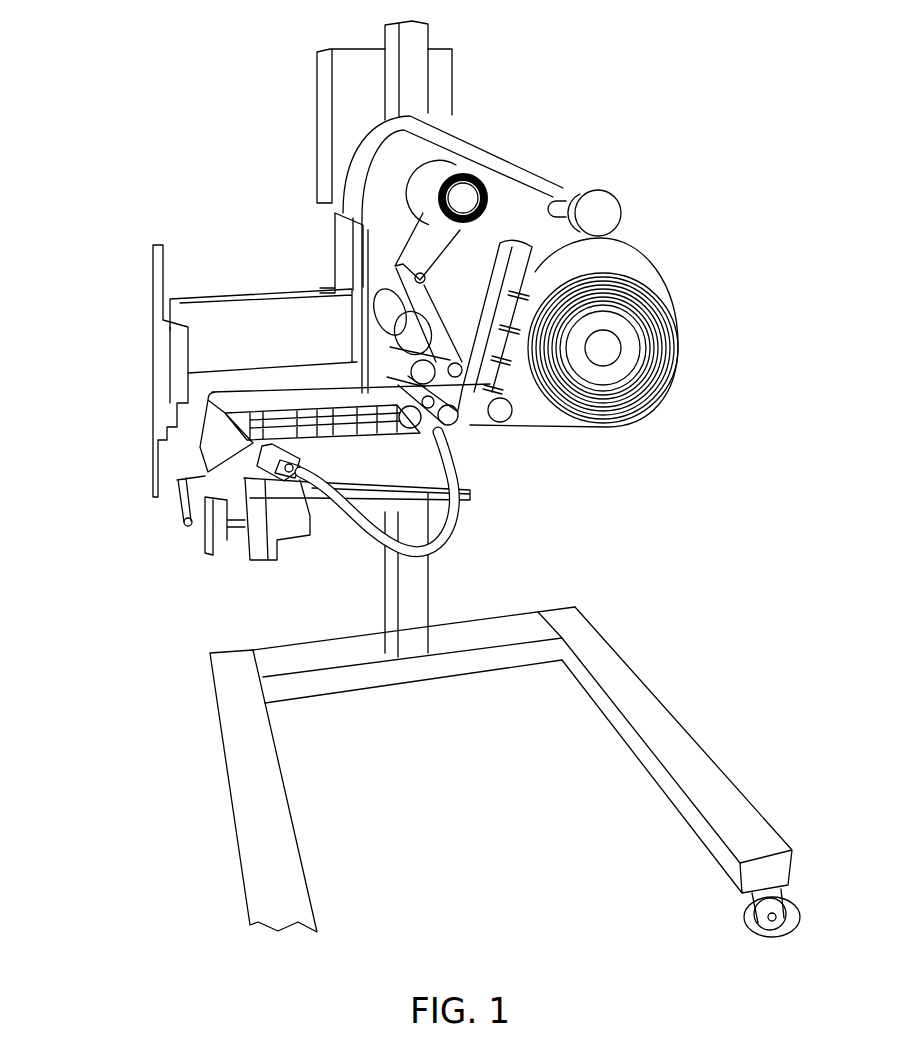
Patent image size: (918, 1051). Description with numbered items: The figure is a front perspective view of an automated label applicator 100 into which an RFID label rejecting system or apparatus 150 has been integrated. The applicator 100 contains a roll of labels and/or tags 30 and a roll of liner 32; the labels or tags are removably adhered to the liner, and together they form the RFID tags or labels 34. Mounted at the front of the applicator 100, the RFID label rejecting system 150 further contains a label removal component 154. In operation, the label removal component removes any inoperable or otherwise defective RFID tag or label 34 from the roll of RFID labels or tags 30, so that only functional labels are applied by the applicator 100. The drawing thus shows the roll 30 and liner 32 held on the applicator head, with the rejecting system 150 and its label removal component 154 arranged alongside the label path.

The automated label applicator 100 is at (705, 516).
The roll of labels and/or tags 30 is at (667, 326).
The roll of liner 32 is at (630, 258).
The RFID tag or label 34 is at (533, 275).
The RFID label rejecting system 150 is at (145, 462).
The label removal component 154 is at (138, 375).